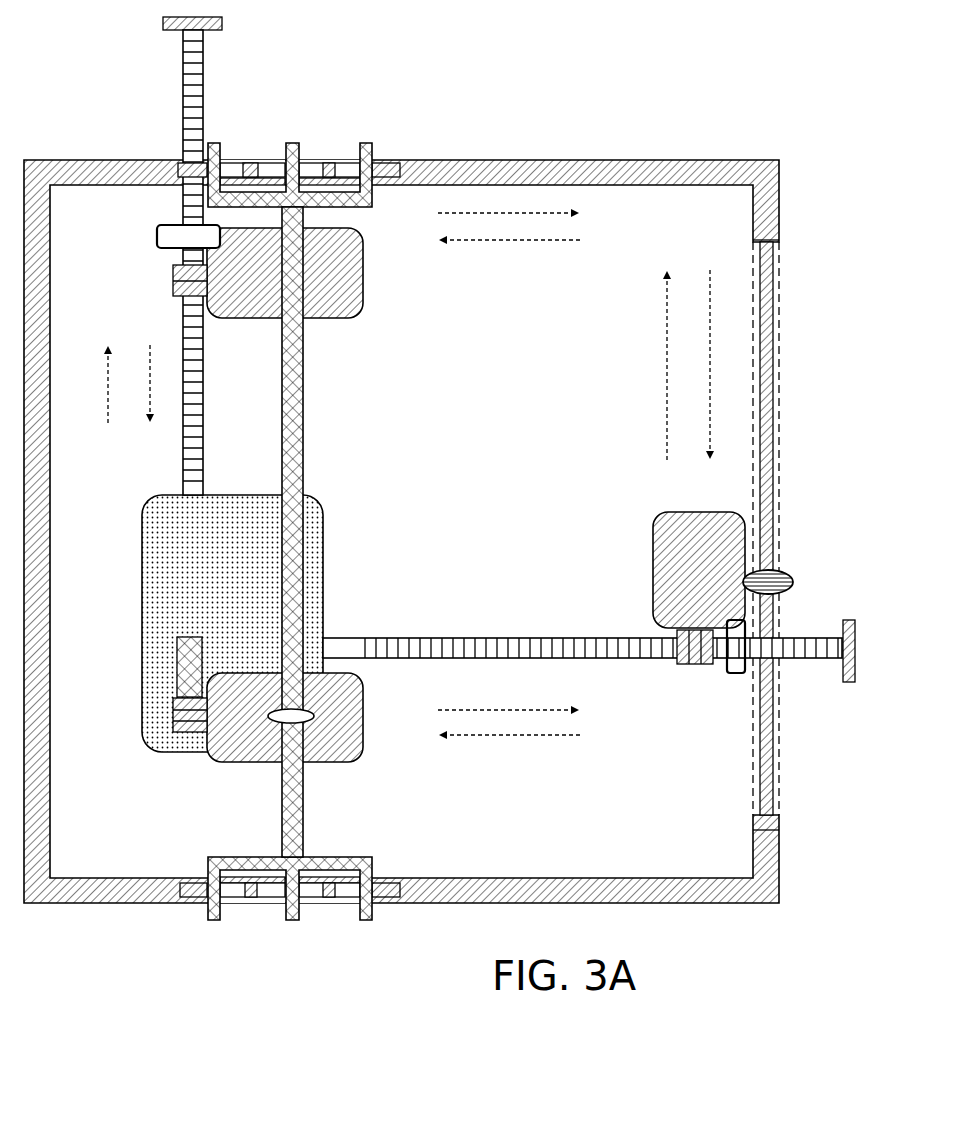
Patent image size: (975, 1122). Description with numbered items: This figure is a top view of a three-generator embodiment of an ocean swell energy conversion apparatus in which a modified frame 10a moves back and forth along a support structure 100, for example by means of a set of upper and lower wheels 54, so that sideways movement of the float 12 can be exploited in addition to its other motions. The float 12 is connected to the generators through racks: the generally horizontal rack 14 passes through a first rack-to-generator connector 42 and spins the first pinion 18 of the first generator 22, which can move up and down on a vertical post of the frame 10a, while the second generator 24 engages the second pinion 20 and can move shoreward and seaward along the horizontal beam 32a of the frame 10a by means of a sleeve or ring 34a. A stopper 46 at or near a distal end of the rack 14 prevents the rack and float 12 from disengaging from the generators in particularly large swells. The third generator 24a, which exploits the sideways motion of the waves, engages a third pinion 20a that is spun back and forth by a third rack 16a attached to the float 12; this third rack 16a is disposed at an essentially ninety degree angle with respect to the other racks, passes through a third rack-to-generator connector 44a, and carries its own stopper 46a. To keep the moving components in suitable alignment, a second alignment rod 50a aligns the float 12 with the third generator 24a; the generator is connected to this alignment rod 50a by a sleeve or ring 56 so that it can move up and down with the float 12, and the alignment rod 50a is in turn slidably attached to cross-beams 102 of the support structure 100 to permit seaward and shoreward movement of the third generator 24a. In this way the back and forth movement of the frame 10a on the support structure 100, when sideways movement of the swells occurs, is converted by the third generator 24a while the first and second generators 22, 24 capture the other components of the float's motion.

The support structure 100 is at (50, 755).
The cross-beams 102 is at (773, 292).
The modified frame 10a is at (304, 463).
The float 12 is at (150, 530).
The generally horizontal rack 14 is at (183, 320).
The third rack 16a is at (443, 645).
The first pinion 18 is at (175, 280).
The second pinion 20 is at (173, 715).
The third pinion 20a is at (687, 664).
The first generator 22 is at (363, 290).
The second generator 24 is at (350, 765).
The third generator 24a is at (657, 535).
The horizontal beam 32a is at (300, 432).
The sleeve or ring 34a is at (272, 722).
The first rack-to-generator connector 42 is at (160, 237).
The third rack-to-generator connector 44a is at (730, 673).
The stopper 46 is at (163, 25).
The stopper 46a is at (850, 620).
The second alignment rod 50a is at (762, 575).
The upper and lower wheels 54 is at (342, 165).
The sleeve or ring 56 is at (785, 580).